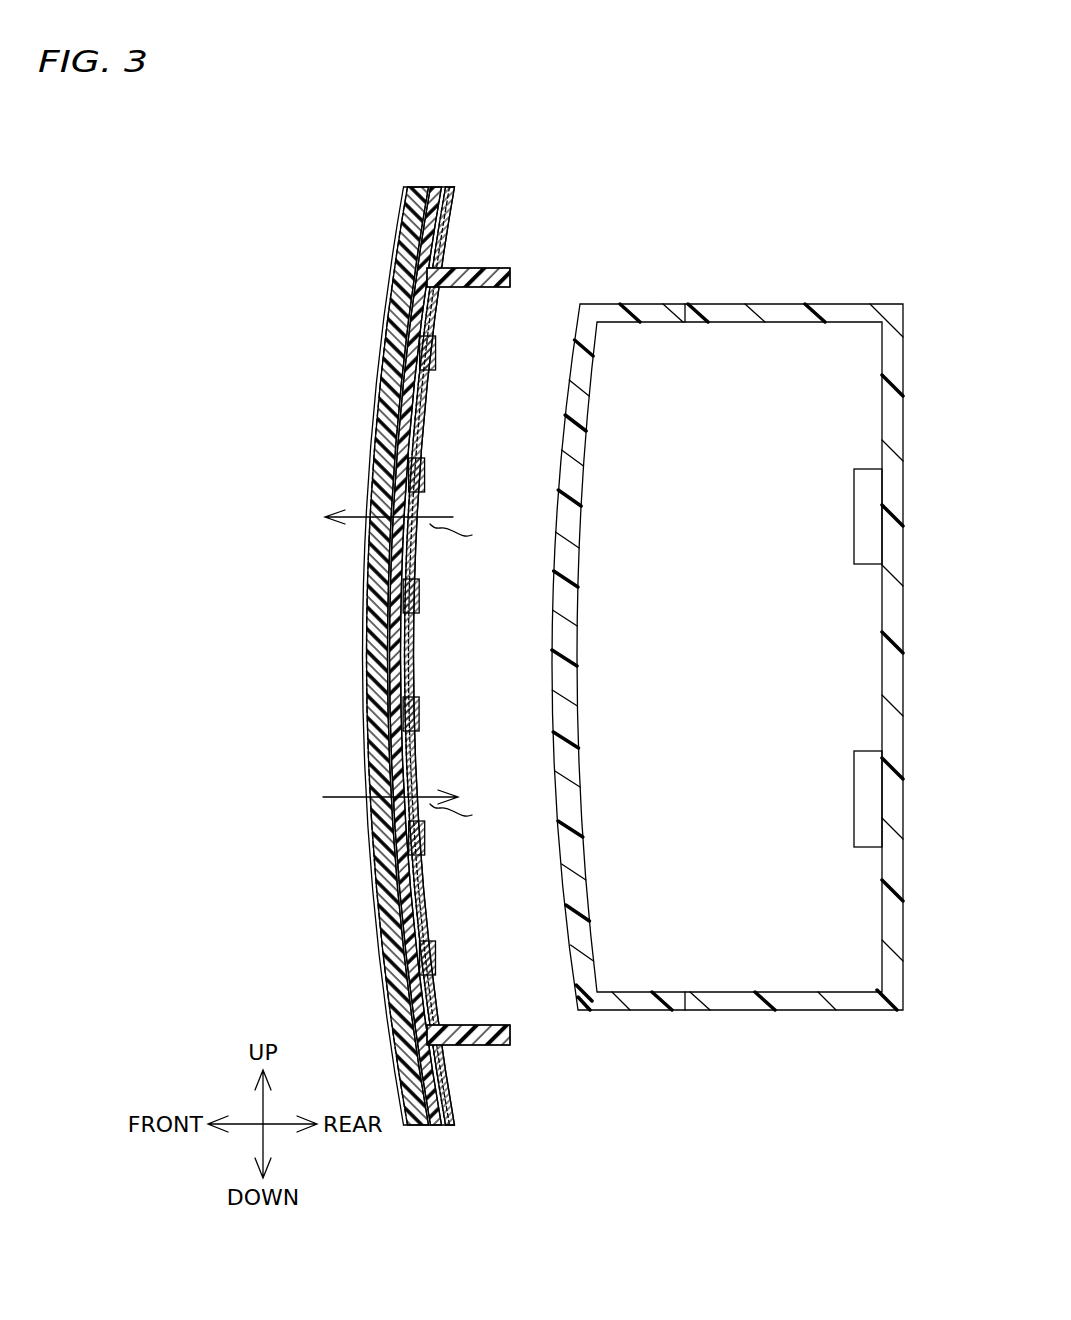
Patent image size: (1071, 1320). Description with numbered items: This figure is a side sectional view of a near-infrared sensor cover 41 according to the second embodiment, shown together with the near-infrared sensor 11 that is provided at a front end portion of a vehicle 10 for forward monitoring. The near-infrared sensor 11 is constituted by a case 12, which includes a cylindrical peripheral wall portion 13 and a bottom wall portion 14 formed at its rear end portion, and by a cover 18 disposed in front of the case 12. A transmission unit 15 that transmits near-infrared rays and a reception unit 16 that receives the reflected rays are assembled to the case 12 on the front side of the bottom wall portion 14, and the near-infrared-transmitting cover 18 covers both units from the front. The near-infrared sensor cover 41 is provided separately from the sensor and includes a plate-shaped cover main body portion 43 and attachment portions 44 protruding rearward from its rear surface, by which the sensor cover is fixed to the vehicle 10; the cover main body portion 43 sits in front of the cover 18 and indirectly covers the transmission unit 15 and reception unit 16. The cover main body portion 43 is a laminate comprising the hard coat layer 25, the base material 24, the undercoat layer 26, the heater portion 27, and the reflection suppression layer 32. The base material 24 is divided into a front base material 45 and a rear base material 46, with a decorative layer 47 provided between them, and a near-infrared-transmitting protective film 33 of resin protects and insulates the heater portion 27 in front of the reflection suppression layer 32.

The vehicle 10 is at (688, 150).
The near-infrared sensor 11 is at (865, 1079).
The case 12 is at (930, 237).
The peripheral wall portion 13 is at (828, 300).
The bottom wall portion 14 is at (892, 338).
The transmission unit 15 is at (856, 520).
The reception unit 16 is at (856, 804).
The cover 18 is at (644, 300).
The base material 24 is at (268, 532).
The hard coat layer 25 is at (403, 276).
The undercoat layer 26 is at (375, 660).
The heater portion 27 is at (438, 482).
The reflection suppression layer 32 is at (410, 660).
The protective film 33 is at (416, 622).
The near-infrared sensor cover 41 is at (383, 656).
The cover main body portion 43 is at (307, 185).
The attachment portions 44 is at (494, 266).
The front base material 45 is at (372, 532).
The rear base material 46 is at (380, 575).
The decorative layer 47 is at (397, 328).